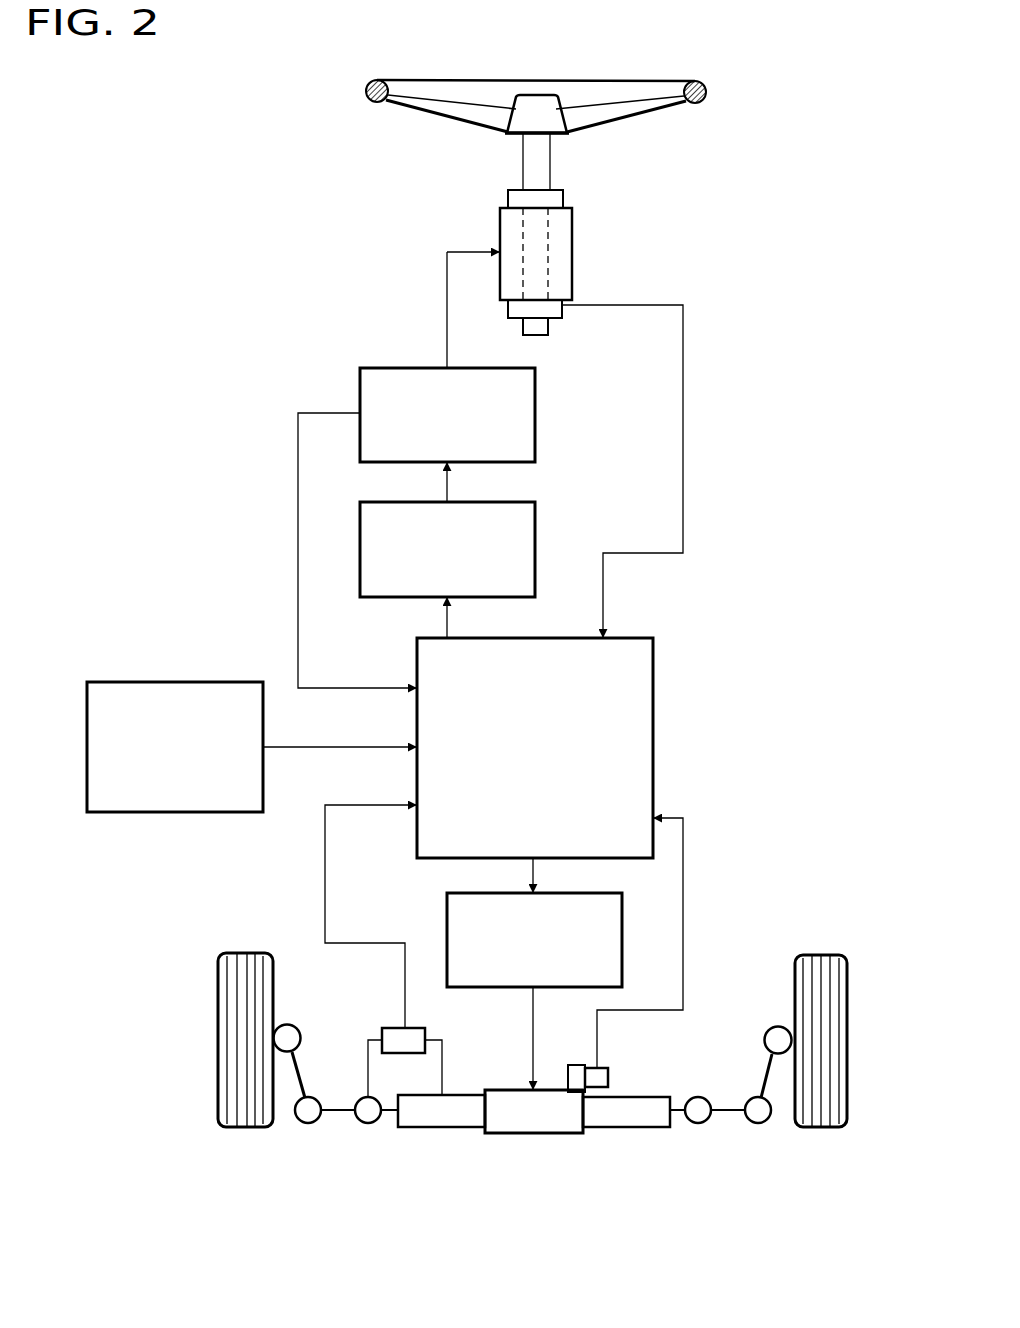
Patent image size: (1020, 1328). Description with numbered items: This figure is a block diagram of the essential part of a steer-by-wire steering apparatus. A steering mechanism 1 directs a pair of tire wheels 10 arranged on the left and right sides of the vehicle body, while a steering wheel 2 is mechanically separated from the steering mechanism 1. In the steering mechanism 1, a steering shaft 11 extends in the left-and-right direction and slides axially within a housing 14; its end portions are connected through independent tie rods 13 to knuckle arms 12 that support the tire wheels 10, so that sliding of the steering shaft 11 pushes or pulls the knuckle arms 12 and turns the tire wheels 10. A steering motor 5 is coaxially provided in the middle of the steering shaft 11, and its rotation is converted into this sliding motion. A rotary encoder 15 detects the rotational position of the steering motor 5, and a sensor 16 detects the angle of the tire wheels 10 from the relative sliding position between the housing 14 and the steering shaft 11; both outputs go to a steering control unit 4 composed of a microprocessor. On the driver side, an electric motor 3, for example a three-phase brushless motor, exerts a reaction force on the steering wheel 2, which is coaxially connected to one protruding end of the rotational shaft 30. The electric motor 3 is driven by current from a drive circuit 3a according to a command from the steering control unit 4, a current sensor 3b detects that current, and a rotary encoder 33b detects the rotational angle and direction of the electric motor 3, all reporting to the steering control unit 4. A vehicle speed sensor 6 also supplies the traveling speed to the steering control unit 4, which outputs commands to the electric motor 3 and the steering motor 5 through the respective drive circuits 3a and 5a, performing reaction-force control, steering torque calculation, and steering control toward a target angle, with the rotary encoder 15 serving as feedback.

The steering mechanism 1 is at (570, 1168).
The steering wheel 2 is at (366, 92).
The electric motor 3 is at (499, 228).
The drive circuit 3a is at (404, 500).
The current sensor 3b is at (402, 362).
The steering control unit 4 is at (568, 637).
The steering motor 5 is at (532, 1135).
The drive circuit 5a is at (447, 913).
The vehicle speed sensor 6 is at (151, 682).
The tire wheels 10 is at (243, 1128).
The steering shaft 11 is at (392, 1112).
The knuckle arms 12 is at (295, 1078).
The tie rods 13 is at (340, 1115).
The housing 14 is at (433, 1128).
The rotary encoder 15 is at (600, 1067).
The sensor 16 is at (425, 1028).
The rotational shaft 30 is at (542, 157).
The rotary encoder 33b is at (557, 320).